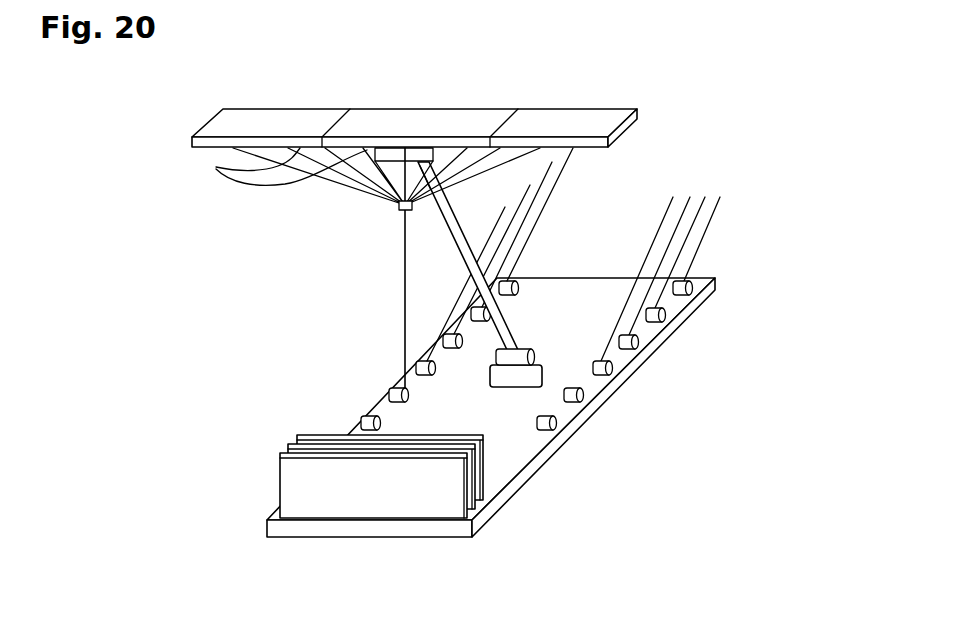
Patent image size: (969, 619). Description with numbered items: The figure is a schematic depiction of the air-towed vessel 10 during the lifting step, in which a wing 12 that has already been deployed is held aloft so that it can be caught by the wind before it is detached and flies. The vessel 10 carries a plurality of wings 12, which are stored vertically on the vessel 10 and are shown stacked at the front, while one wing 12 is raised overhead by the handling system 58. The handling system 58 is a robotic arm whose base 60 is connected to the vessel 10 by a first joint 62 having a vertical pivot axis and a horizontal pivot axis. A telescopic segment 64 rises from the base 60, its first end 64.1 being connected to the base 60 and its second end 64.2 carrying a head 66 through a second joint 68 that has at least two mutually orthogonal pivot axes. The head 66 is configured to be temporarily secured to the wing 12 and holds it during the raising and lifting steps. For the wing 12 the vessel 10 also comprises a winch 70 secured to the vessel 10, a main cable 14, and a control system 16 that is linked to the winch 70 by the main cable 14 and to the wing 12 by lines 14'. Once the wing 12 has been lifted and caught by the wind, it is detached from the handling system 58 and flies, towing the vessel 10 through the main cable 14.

The air-towed vessel 10 is at (598, 290).
The wing 12 is at (505, 110).
The main cable 14 is at (348, 268).
The lines 14' is at (274, 166).
The control system 16 is at (398, 213).
The handling system 58 is at (470, 233).
The base 60 is at (511, 387).
The first joint 62 is at (533, 341).
The segment 64 is at (443, 229).
The first end of the segment 64.1 is at (520, 366).
The second end of the segment 64.2 is at (415, 173).
The head 66 is at (393, 150).
The second joint 68 is at (399, 205).
The winch 70 is at (387, 388).